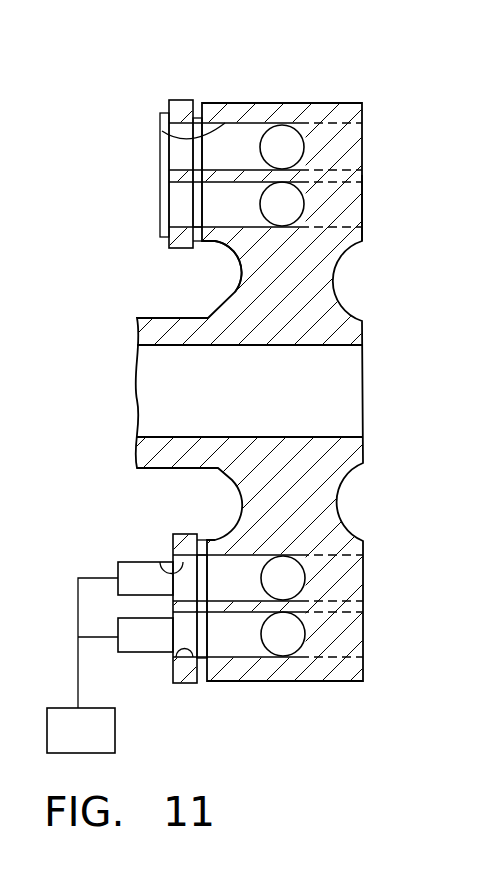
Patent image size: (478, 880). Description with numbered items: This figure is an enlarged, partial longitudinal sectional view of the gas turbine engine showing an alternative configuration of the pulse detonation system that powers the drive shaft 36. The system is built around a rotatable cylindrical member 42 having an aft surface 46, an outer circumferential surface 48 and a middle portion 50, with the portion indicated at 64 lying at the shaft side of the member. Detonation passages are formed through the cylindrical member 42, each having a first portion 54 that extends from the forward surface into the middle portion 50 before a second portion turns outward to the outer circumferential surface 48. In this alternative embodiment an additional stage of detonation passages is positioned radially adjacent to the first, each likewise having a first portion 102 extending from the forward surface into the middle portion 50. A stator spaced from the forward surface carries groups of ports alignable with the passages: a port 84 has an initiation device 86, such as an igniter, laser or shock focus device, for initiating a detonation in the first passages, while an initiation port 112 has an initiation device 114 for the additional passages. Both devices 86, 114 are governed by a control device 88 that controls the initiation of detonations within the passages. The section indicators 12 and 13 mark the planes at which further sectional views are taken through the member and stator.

The section line 12-12 indicator 12 is at (243, 47).
The section line 13-13 indicator 13 is at (203, 56).
The drive shaft 36 is at (165, 470).
The rotatable cylindrical member 42 is at (365, 115).
The aft surface 46 is at (363, 208).
The outer circumferential surface 48 is at (353, 103).
The middle portion 50 is at (335, 598).
The first portion 54 is at (232, 244).
The central bore hub 64 is at (365, 445).
The port 84 is at (170, 563).
The initiation device 86 is at (135, 561).
The control device 88 is at (83, 755).
The first portion 102 is at (169, 132).
The initiation port 112 is at (173, 657).
The initiation device 114 is at (153, 653).